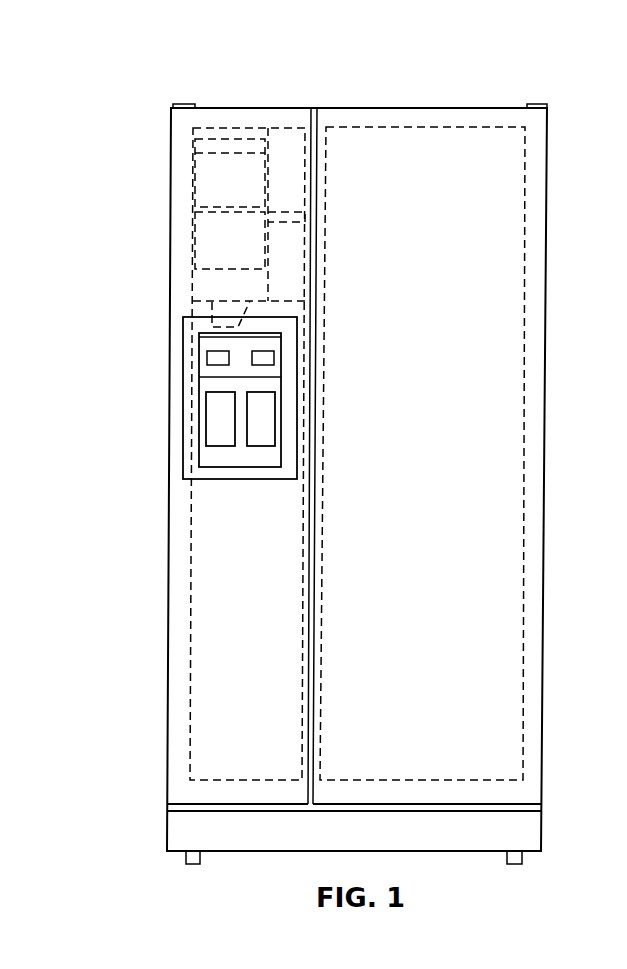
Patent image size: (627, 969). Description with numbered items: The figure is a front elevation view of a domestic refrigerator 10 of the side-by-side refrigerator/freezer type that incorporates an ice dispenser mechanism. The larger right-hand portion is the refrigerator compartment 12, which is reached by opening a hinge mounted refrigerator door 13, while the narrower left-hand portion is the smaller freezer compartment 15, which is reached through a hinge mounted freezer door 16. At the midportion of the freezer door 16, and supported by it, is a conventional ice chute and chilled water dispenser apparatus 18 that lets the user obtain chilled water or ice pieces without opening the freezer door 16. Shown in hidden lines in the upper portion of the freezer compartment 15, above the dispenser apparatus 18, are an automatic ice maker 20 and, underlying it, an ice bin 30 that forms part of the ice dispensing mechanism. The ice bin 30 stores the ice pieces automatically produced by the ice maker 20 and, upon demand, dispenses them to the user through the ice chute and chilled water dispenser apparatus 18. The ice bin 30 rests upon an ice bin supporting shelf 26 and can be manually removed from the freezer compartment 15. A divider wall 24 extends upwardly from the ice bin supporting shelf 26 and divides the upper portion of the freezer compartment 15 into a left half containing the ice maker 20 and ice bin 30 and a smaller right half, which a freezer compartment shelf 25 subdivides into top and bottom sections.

The domestic refrigerator 10 is at (441, 92).
The refrigerator compartment 12 is at (524, 474).
The refrigerator door 13 is at (490, 578).
The freezer compartment 15 is at (190, 525).
The freezer door 16 is at (207, 605).
The ice chute and chilled water dispenser apparatus 18 is at (184, 432).
The automatic ice maker 20 is at (197, 180).
The divider wall 24 is at (272, 158).
The freezer compartment shelf 25 is at (283, 215).
The ice bin supporting shelf 26 is at (283, 300).
The ice bin 30 is at (196, 255).